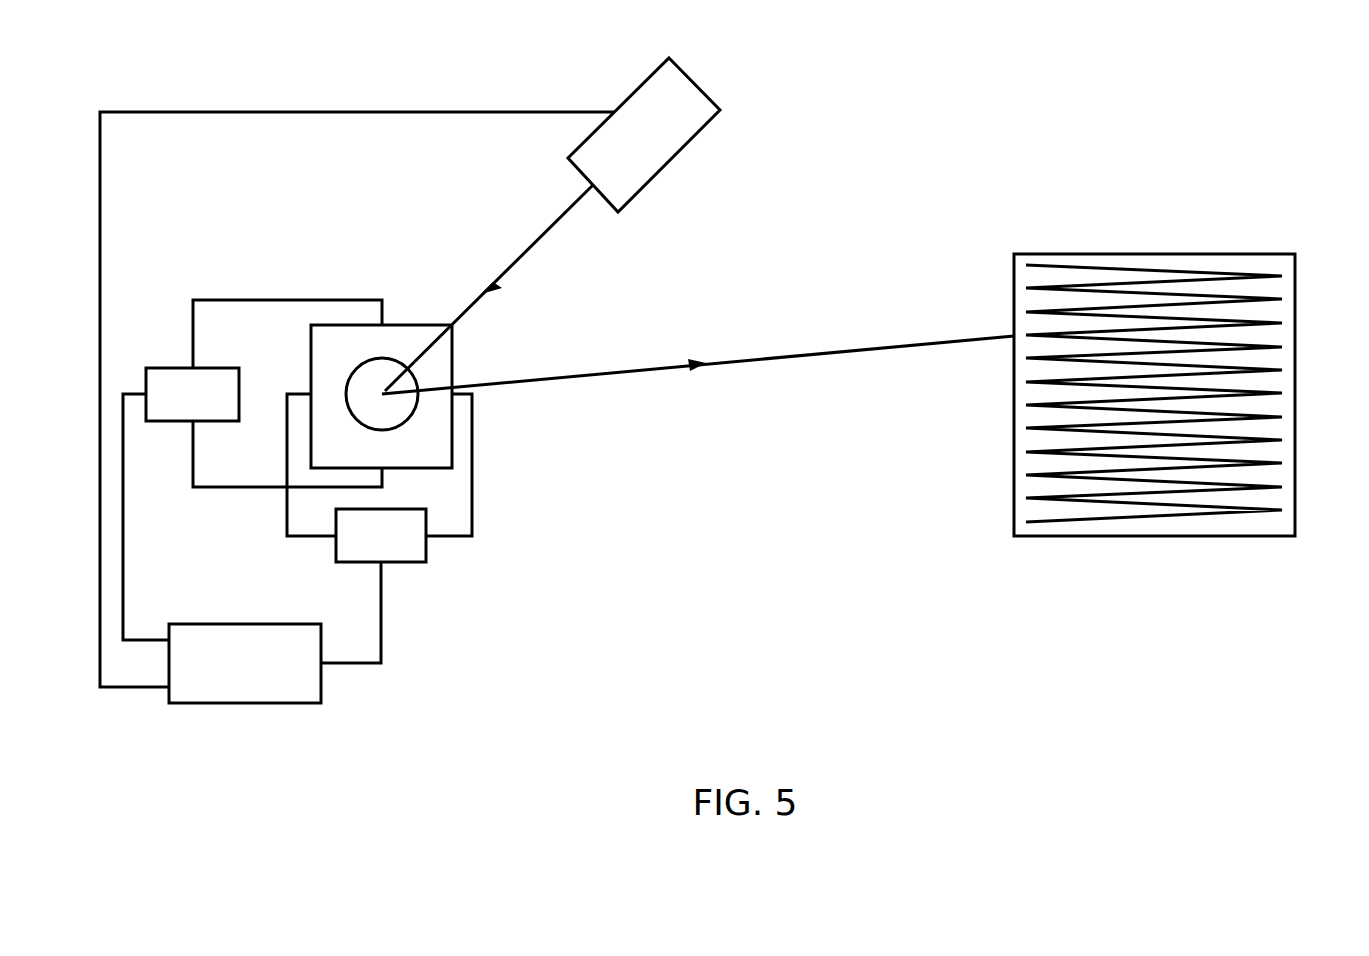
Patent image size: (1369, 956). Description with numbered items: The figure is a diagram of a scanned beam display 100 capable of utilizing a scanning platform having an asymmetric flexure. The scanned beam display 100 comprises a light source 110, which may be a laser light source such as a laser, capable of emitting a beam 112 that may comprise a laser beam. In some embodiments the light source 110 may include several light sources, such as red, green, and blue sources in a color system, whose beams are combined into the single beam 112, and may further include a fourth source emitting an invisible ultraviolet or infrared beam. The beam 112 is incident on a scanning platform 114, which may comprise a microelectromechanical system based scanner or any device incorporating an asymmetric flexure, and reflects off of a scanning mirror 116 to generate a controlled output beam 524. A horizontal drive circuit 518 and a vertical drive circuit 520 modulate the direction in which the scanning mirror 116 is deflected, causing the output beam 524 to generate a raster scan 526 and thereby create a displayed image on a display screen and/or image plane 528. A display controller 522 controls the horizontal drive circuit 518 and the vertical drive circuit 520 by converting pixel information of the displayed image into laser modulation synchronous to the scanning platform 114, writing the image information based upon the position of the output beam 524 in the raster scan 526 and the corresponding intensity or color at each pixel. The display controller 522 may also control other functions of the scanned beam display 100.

The scanned beam display 100 is at (1193, 95).
The light source 110 is at (703, 84).
The beam 112 is at (535, 240).
The scanning platform 114 is at (416, 322).
The scanning mirror 116 is at (401, 423).
The horizontal drive circuit 518 is at (182, 368).
The vertical drive circuit 520 is at (427, 545).
The display controller 522 is at (322, 686).
The output beam 524 is at (630, 371).
The raster scan 526 is at (1199, 270).
The display screen and/or image plane 528 is at (1297, 275).